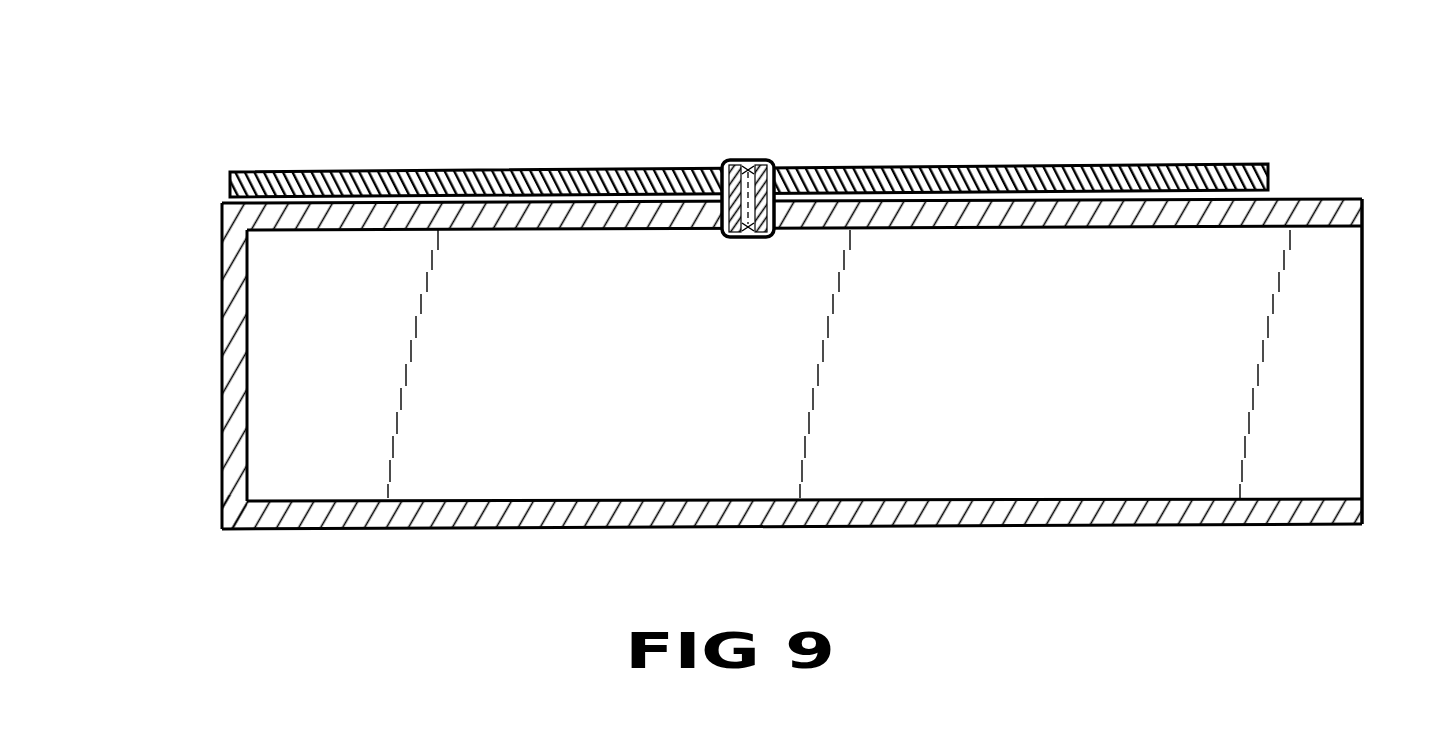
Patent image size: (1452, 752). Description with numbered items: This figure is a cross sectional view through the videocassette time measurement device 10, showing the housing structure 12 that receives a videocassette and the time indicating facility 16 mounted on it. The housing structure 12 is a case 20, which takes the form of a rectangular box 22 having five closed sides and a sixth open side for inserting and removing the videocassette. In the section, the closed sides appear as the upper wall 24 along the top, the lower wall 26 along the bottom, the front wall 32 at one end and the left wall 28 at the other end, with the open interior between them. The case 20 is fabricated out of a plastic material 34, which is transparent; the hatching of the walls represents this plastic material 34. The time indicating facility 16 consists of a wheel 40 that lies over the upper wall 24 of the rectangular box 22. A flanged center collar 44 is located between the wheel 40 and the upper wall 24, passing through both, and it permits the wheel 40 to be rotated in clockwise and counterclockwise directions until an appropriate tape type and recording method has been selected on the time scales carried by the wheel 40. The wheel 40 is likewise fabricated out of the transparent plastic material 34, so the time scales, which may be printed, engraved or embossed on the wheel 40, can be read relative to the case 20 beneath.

The videocassette time measurement device 10 is at (1100, 92).
The housing structure 12 is at (210, 370).
The time indicating facility 16 is at (328, 162).
The case 20 is at (210, 475).
The rectangular box 22 is at (1358, 216).
The upper wall 24 is at (1323, 203).
The lower wall 26 is at (1115, 527).
The left wall 28 is at (1352, 332).
The front wall 32 is at (230, 236).
The plastic material 34 is at (1157, 182).
The wheel 40 is at (516, 185).
The flanged center collar 44 is at (768, 161).